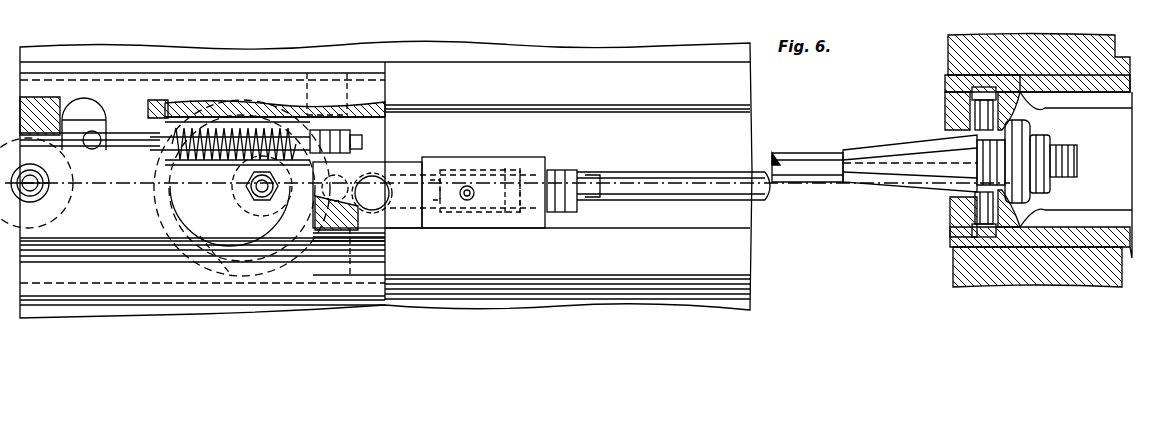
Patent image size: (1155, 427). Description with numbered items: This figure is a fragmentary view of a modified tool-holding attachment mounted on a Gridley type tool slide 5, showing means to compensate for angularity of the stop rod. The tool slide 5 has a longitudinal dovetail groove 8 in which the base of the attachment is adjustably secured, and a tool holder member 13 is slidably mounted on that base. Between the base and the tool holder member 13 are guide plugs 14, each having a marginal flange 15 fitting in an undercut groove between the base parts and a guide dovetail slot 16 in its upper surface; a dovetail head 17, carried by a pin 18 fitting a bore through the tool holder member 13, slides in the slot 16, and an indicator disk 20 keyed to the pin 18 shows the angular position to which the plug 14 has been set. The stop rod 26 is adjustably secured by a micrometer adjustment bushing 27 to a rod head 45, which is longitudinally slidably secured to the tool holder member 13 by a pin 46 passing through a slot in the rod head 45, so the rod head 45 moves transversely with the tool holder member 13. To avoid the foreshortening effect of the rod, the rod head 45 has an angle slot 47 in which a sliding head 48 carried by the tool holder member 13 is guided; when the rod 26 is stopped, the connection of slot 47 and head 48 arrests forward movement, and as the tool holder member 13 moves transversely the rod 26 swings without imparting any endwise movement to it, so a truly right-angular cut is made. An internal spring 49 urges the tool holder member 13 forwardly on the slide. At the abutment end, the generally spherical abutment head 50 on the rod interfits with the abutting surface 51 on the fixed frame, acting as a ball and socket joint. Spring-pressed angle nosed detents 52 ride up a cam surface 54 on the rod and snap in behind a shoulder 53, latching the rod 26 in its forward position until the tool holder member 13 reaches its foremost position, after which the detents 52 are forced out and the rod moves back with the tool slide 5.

The tool slide 5 is at (570, 305).
The dovetail groove 8 is at (630, 110).
The tool holder member 13 is at (165, 300).
The guide plug 14 is at (172, 212).
The marginal flange 15 is at (232, 276).
The guide dovetail slot 16 is at (165, 188).
The dovetail head 17 is at (242, 190).
The pin 18 is at (238, 216).
The indicator disk 20 is at (278, 219).
The stop rod 26 is at (800, 192).
The micrometer adjustment bushing 27 is at (567, 170).
The rod head 45 is at (498, 159).
The pin 46 is at (388, 204).
The angle slot 47 is at (330, 232).
The sliding head 48 is at (362, 230).
The internal spring 49 is at (196, 118).
The abutment head 50 is at (1040, 195).
The abutting surface 51 is at (1022, 110).
The spring-pressed angle nosed detent 52 is at (970, 98).
The shoulder 53 is at (960, 182).
The cam surface 54 is at (910, 146).